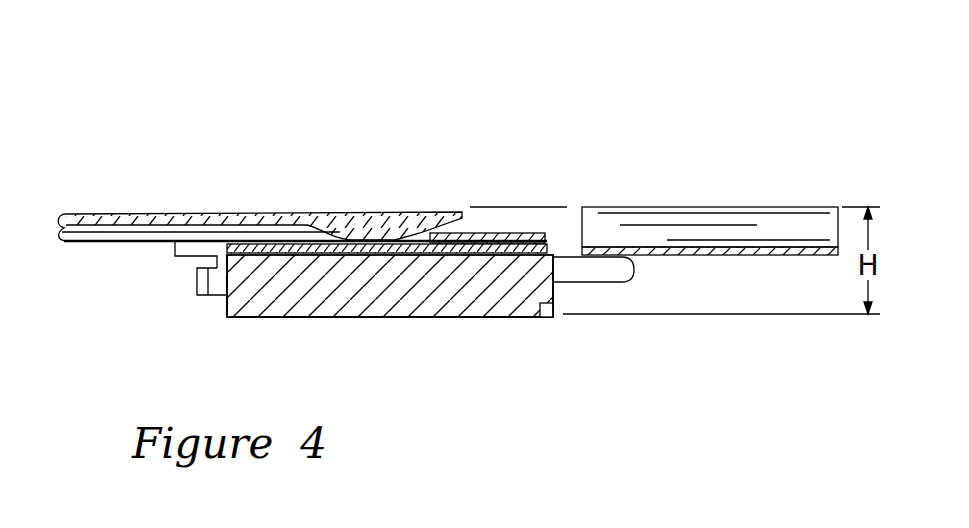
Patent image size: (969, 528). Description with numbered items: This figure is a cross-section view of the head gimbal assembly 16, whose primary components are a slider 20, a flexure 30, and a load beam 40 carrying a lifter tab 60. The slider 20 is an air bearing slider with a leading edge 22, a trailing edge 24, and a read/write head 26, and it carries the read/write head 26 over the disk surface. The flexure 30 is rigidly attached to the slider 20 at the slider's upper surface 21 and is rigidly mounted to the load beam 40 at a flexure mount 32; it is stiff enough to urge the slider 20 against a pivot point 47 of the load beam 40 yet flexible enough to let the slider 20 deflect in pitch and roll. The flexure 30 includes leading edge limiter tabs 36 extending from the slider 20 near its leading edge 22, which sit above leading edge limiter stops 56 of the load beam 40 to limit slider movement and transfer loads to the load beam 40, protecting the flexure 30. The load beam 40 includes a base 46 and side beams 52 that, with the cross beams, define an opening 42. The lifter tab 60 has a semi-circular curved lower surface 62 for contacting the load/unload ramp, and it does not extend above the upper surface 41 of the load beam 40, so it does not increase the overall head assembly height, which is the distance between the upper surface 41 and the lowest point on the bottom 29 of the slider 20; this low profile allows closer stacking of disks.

The head gimbal assembly 16 is at (323, 168).
The slider 20 is at (460, 320).
The upper surface 21 is at (297, 244).
The leading edge 22 is at (227, 310).
The trailing edge 24 is at (556, 294).
The read/write head 26 is at (545, 320).
The bottom 29 is at (352, 320).
The flexure 30 is at (127, 243).
The flexure mount 32 is at (105, 240).
The leading edge limiter tabs 36 is at (183, 252).
The load beam 40 is at (130, 211).
The upper surface 41 is at (220, 214).
The opening 42 is at (482, 207).
The base 46 is at (387, 226).
The pivot point 47 is at (397, 233).
The side beams 52 is at (572, 272).
The leading edge limiter stops 56 is at (197, 278).
The lifter tab 60 is at (712, 207).
The curved lower surface 62 is at (765, 256).